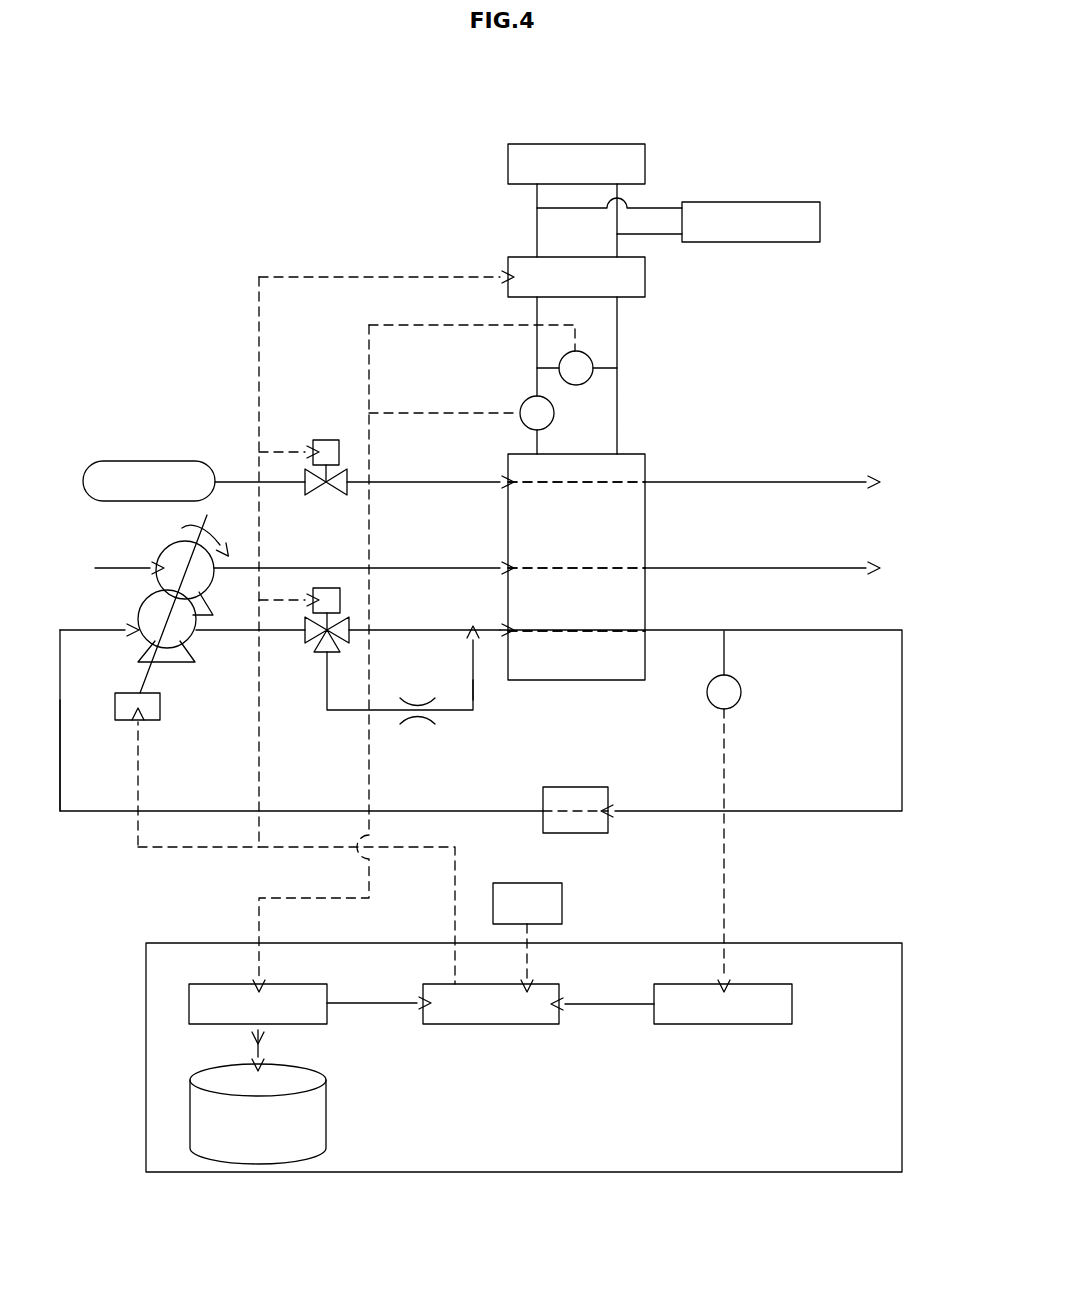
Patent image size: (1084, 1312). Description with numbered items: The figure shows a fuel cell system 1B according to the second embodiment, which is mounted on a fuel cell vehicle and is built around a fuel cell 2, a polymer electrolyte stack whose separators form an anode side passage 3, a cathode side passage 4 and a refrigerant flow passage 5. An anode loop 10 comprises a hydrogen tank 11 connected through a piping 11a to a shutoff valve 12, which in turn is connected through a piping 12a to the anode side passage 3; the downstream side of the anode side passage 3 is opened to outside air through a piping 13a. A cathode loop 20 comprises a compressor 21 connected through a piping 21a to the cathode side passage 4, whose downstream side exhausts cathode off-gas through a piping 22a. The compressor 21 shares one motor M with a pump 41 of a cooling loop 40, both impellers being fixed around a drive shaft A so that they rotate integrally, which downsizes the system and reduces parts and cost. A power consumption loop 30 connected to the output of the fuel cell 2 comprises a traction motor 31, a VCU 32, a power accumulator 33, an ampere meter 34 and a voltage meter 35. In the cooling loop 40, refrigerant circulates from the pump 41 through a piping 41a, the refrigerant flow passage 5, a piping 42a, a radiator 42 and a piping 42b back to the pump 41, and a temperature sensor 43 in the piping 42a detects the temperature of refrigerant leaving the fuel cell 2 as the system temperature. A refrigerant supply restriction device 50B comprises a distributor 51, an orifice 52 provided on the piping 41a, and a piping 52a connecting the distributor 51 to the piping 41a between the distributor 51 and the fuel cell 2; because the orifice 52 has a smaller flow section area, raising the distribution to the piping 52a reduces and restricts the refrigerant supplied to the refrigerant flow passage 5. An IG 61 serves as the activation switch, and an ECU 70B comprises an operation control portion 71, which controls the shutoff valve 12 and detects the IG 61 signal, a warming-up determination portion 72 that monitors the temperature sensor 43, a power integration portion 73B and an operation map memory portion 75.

The fuel cell system 1B is at (223, 173).
The anode loop 10 is at (125, 408).
The hydrogen tank 11 is at (172, 461).
The piping 11a is at (282, 485).
The shutoff valve 12 is at (322, 440).
The piping 12a is at (412, 485).
The fuel cell 2 is at (683, 458).
The anode side passage 3 is at (540, 490).
The cathode side passage 4 is at (600, 565).
The refrigerant flow passage 5 is at (548, 628).
The piping 13a is at (720, 485).
The piping 22a is at (805, 568).
The cathode loop 20 is at (155, 545).
The compressor 21 is at (150, 585).
The piping 21a is at (417, 571).
The pump 41 is at (143, 643).
The piping 41a is at (282, 633).
The drive shaft A is at (135, 678).
The motor M is at (150, 720).
The cooling loop 40 is at (227, 652).
The distributor 51 is at (327, 588).
The orifice 52 is at (425, 720).
The piping 52a is at (478, 700).
The refrigerant supply restriction device 50B is at (420, 742).
The power consumption loop 30 is at (463, 235).
The traction motor 31 is at (583, 144).
The VCU 32 is at (645, 275).
The power accumulator 33 is at (762, 202).
The ampere meter 34 is at (554, 413).
The voltage meter 35 is at (591, 355).
The temperature sensor 43 is at (741, 692).
The piping 42a is at (852, 632).
The radiator 42 is at (592, 833).
The piping 42b is at (98, 812).
The IG 61 is at (562, 902).
The ECU 70B is at (818, 943).
The operation control portion 71 is at (547, 984).
The warming-up determination portion 72 is at (680, 1024).
The power integration portion 73B is at (313, 982).
The operation map memory portion 75 is at (326, 1115).